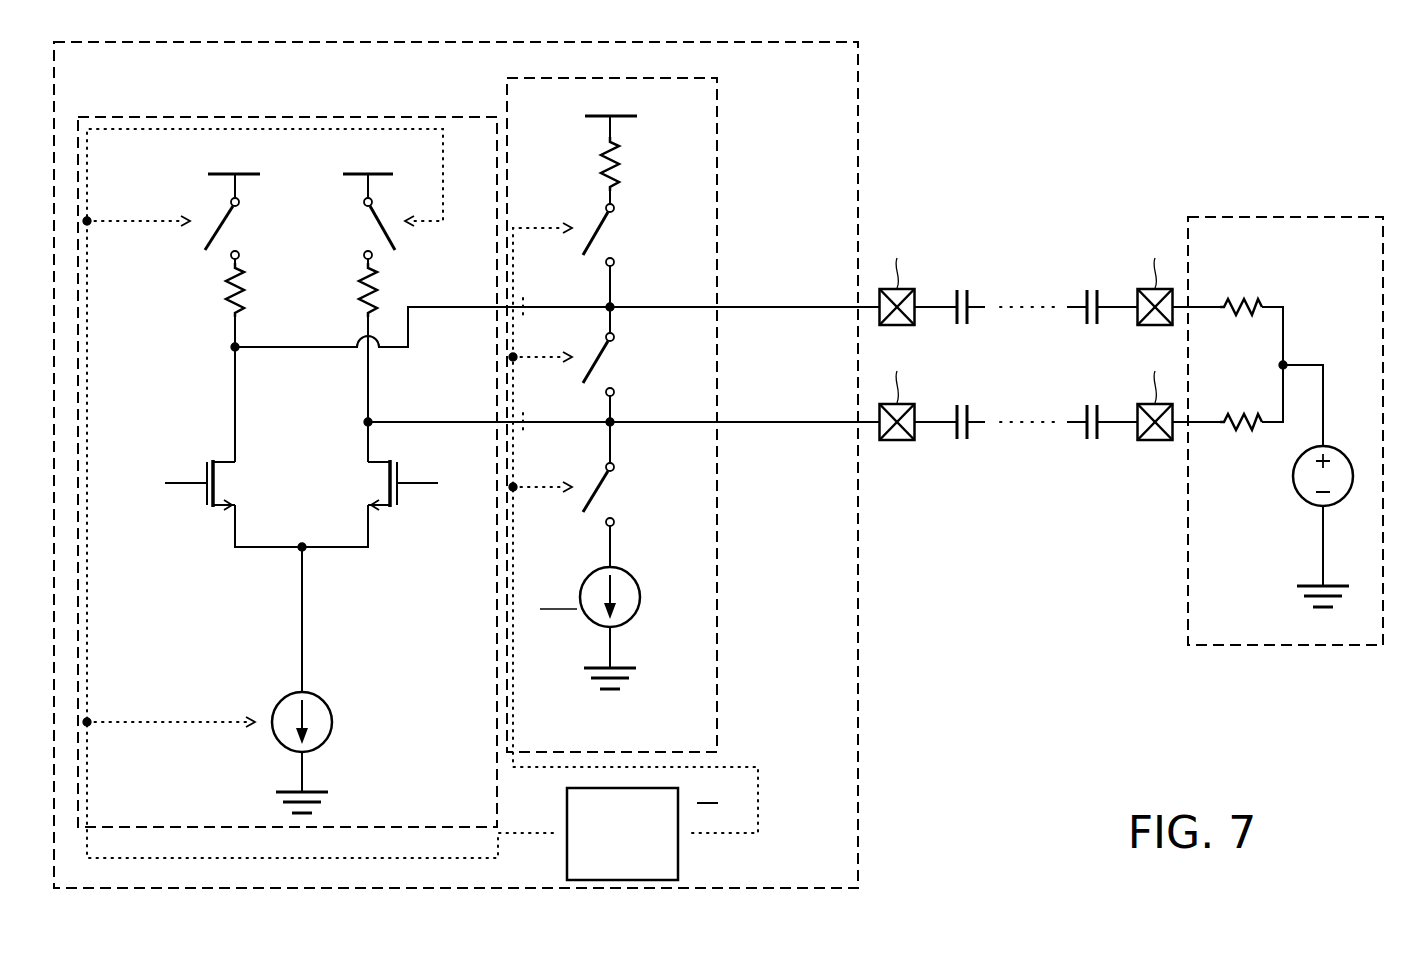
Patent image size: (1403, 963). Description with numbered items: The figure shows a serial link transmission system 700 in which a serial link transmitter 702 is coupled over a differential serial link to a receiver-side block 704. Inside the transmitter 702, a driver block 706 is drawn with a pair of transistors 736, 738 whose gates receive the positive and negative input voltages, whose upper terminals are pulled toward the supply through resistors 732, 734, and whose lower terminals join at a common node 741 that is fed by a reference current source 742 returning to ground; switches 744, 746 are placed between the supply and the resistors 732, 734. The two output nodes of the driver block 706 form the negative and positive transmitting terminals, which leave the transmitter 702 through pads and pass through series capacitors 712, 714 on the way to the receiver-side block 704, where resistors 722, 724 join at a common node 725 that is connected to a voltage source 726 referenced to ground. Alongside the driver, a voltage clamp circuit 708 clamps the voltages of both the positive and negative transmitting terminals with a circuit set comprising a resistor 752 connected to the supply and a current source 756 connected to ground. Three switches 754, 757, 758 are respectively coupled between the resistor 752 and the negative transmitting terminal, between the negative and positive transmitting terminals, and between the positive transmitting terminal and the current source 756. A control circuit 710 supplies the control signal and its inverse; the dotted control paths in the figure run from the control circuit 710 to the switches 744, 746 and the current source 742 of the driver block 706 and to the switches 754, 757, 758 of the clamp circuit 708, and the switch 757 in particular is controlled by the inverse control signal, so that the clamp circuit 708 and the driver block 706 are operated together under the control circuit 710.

The communication system 700 is at (1297, 112).
The serial link transmitter 702 is at (868, 117).
The receiver circuit 704 is at (1287, 217).
The driver circuit 706 is at (310, 117).
The voltage clamp circuit 708 is at (505, 84).
The control circuit 710 is at (680, 860).
The coupling capacitors (tx-/rx- line) 712 is at (1092, 288).
The coupling capacitors (tx+/rx+ line) 714 is at (1092, 403).
The termination resistor 722 is at (1240, 295).
The termination resistor 724 is at (1240, 415).
The common node 725 is at (1288, 362).
The voltage source 726 is at (1300, 500).
The load resistor 732 is at (222, 295).
The load resistor 734 is at (357, 295).
The input transistor 736 is at (207, 510).
The input transistor 738 is at (397, 510).
The common source node 741 is at (302, 545).
The reference current source 742 is at (320, 697).
The switch 744 is at (240, 227).
The switch 746 is at (363, 223).
The resistor 752 is at (622, 160).
The switch 754 is at (615, 233).
The current source 756 is at (632, 573).
The switch 757 is at (622, 360).
The switch 758 is at (622, 490).